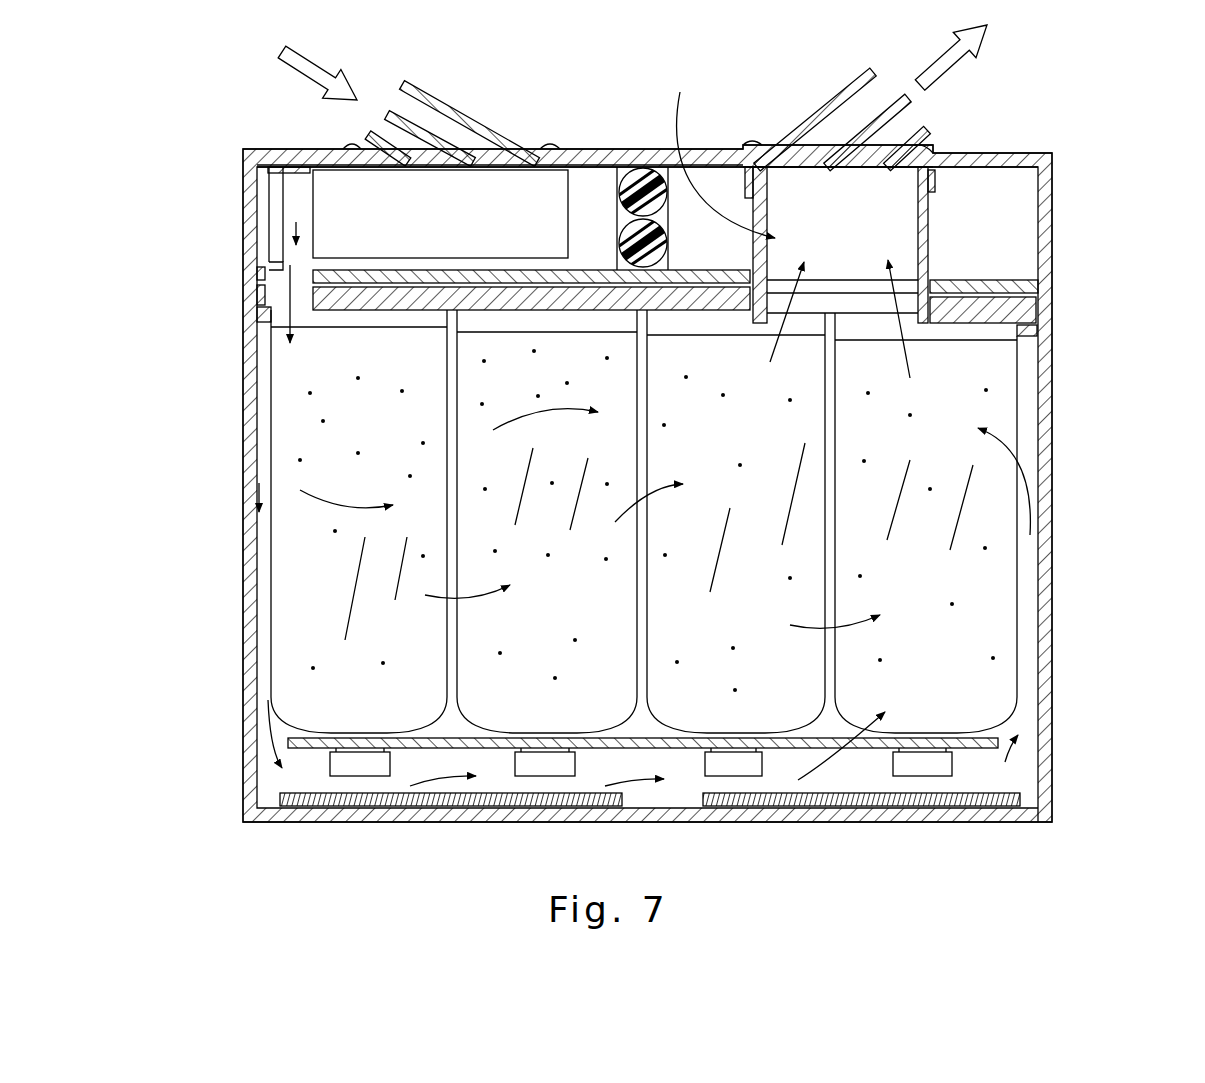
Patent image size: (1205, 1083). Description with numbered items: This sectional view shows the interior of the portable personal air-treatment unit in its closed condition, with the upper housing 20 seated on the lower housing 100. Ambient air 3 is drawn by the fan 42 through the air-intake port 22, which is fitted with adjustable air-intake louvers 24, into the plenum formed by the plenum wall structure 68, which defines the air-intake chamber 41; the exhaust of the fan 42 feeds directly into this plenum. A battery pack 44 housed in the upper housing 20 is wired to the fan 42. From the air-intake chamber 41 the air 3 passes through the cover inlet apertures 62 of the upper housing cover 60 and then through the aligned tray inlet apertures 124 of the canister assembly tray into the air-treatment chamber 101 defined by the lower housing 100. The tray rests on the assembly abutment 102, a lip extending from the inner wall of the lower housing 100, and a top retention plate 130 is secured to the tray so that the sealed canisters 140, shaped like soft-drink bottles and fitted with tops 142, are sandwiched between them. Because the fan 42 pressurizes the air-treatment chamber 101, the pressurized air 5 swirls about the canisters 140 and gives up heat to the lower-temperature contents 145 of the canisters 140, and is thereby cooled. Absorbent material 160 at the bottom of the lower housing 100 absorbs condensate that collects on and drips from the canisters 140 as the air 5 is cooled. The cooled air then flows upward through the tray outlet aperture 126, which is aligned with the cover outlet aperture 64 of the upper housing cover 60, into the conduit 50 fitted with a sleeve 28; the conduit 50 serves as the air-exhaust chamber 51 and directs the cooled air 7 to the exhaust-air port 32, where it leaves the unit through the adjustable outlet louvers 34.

The ambient air 3 is at (294, 73).
The pressurized air 5 is at (643, 504).
The cooled air 7 is at (894, 201).
The upper housing 20 is at (1066, 228).
The air-intake port 22 is at (562, 129).
The air-intake louvers 24 is at (386, 113).
The sleeve 28 is at (936, 183).
The exhaust-air port 32 is at (966, 148).
The outlet louvers 34 is at (840, 88).
The air-intake chamber 41 is at (285, 240).
The fan 42 is at (466, 227).
The battery pack 44 is at (665, 215).
The conduit 50 is at (930, 215).
The air-exhaust chamber 51 is at (726, 154).
The upper housing cover 60 is at (594, 270).
The cover inlet apertures 62 is at (268, 258).
The cover outlet aperture 64 is at (942, 275).
The plenum wall structure 68 is at (280, 172).
The lower housing 100 is at (1067, 540).
The air-treatment chamber 101 is at (263, 423).
The assembly abutment 102 is at (262, 316).
The canister tray inlet apertures 124 is at (318, 314).
The tray outlet aperture 126 is at (930, 330).
The top retention plate 130 is at (972, 752).
The canisters 140 is at (270, 592).
The tops 142 is at (390, 765).
The lower-temperature contents 145 is at (308, 570).
The absorbent material 160 is at (452, 801).